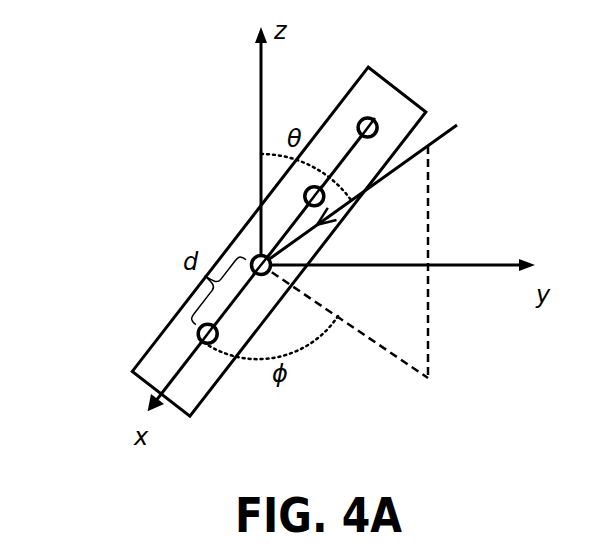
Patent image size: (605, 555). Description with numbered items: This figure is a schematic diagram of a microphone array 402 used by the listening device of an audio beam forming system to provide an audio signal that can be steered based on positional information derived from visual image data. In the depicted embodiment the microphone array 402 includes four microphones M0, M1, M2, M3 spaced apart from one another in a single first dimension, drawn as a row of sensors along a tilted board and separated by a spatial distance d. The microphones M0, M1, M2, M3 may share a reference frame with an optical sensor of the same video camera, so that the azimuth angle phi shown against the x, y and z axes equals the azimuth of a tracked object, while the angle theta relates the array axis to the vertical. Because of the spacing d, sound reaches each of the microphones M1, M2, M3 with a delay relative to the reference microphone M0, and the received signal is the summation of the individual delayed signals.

The microphone array 402 is at (414, 96).
The microphone M0 is at (199, 330).
The microphone M1 is at (253, 260).
The microphone M2 is at (310, 186).
The microphone M3 is at (350, 122).